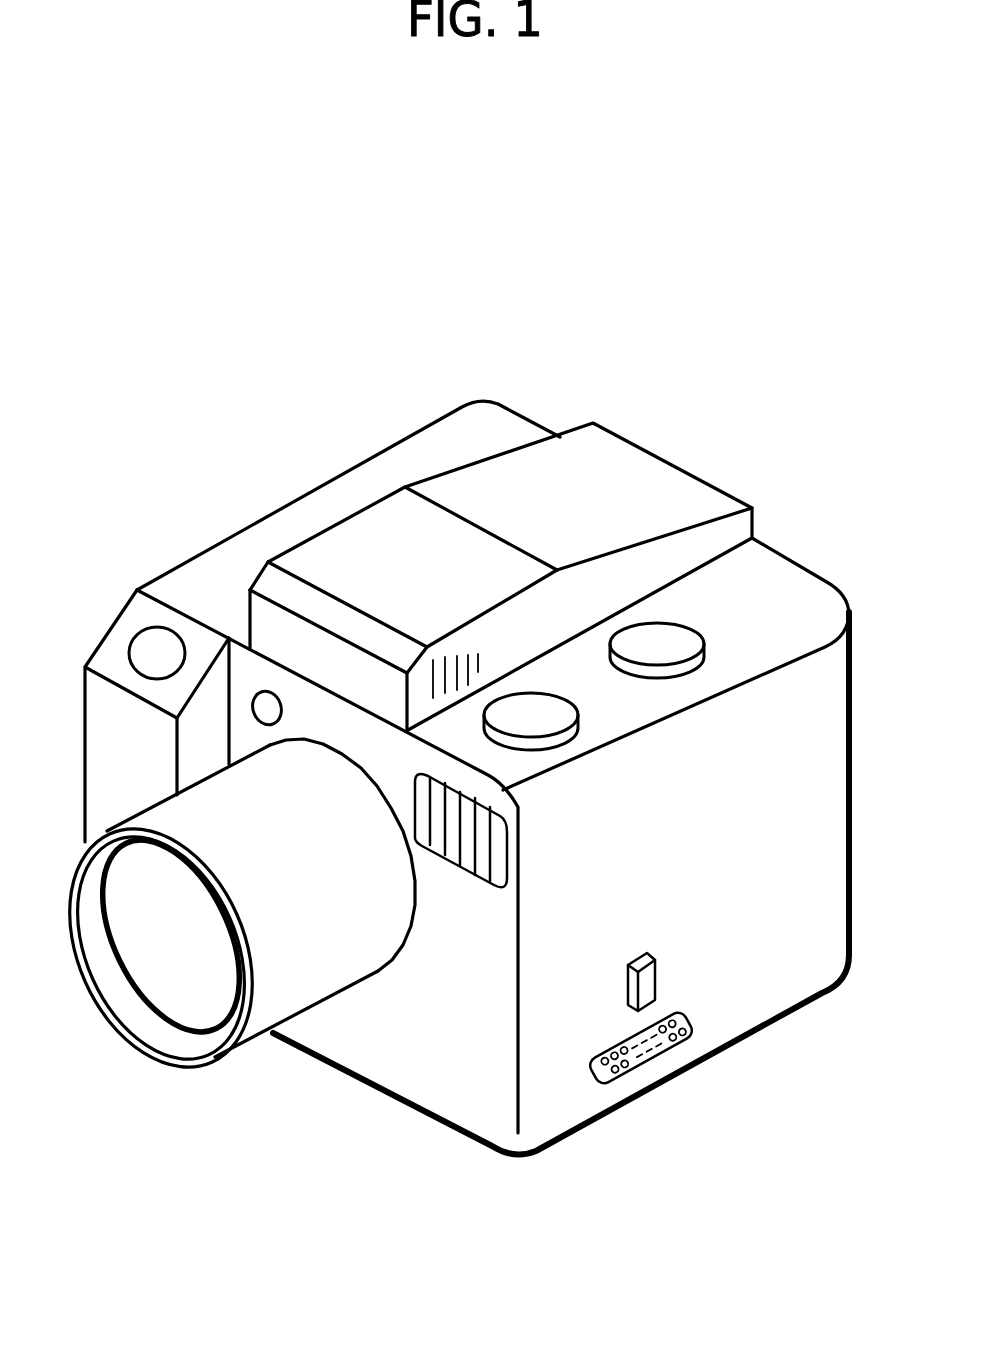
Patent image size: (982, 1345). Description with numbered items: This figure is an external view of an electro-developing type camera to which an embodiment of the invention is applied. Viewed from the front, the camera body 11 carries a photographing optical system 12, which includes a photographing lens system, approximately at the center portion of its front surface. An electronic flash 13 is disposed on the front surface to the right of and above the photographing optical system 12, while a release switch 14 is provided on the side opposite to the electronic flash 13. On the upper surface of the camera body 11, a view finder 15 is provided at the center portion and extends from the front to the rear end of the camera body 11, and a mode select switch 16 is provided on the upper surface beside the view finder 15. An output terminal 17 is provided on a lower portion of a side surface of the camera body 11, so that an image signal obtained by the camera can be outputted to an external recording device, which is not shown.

The camera body 11 is at (407, 1110).
The photographing optical system 12 is at (183, 990).
The electronic flash 13 is at (483, 843).
The release switch 14 is at (157, 653).
The view finder 15 is at (370, 545).
The mode select switch 16 is at (657, 648).
The output terminal 17 is at (660, 1060).